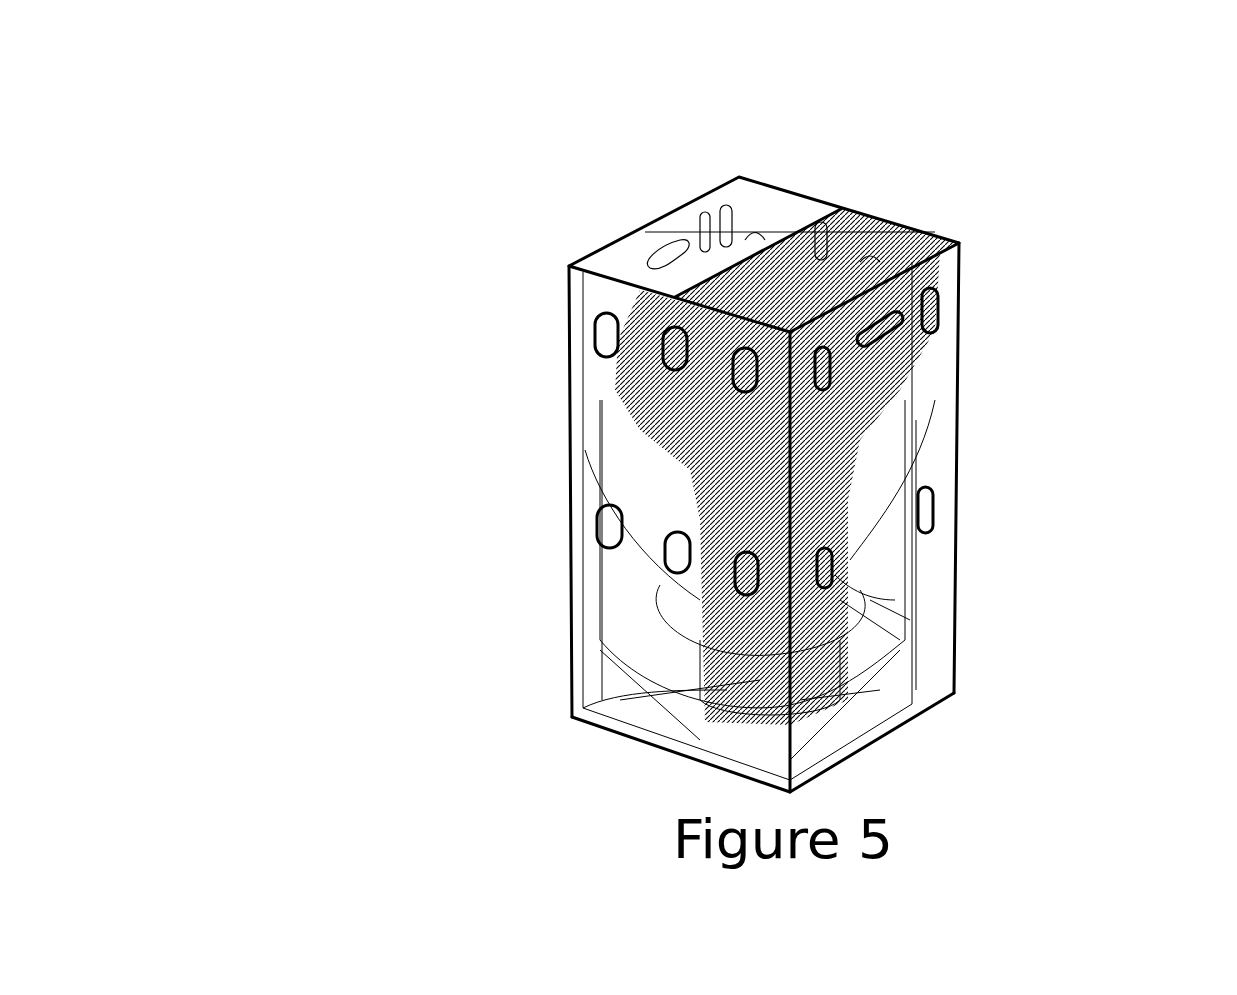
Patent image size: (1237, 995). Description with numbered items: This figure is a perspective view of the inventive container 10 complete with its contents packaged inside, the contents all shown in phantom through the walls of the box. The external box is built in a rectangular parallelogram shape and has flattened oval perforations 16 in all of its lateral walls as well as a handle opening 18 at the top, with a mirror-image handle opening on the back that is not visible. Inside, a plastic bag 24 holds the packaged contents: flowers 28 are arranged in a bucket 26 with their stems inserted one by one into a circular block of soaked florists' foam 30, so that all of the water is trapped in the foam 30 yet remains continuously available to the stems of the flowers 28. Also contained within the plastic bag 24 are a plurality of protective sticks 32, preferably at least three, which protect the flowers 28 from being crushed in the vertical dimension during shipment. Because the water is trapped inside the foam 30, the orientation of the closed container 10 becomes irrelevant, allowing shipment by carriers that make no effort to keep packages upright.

The present invention 10 is at (432, 335).
The flattened oval perforations 16 is at (937, 310).
The handle opening 18 is at (668, 264).
The plastic bag 24 is at (917, 428).
The bucket 26 is at (840, 582).
The flowers 28 is at (870, 370).
The florists' foam 30 is at (838, 637).
The protective sticks 32 is at (890, 735).